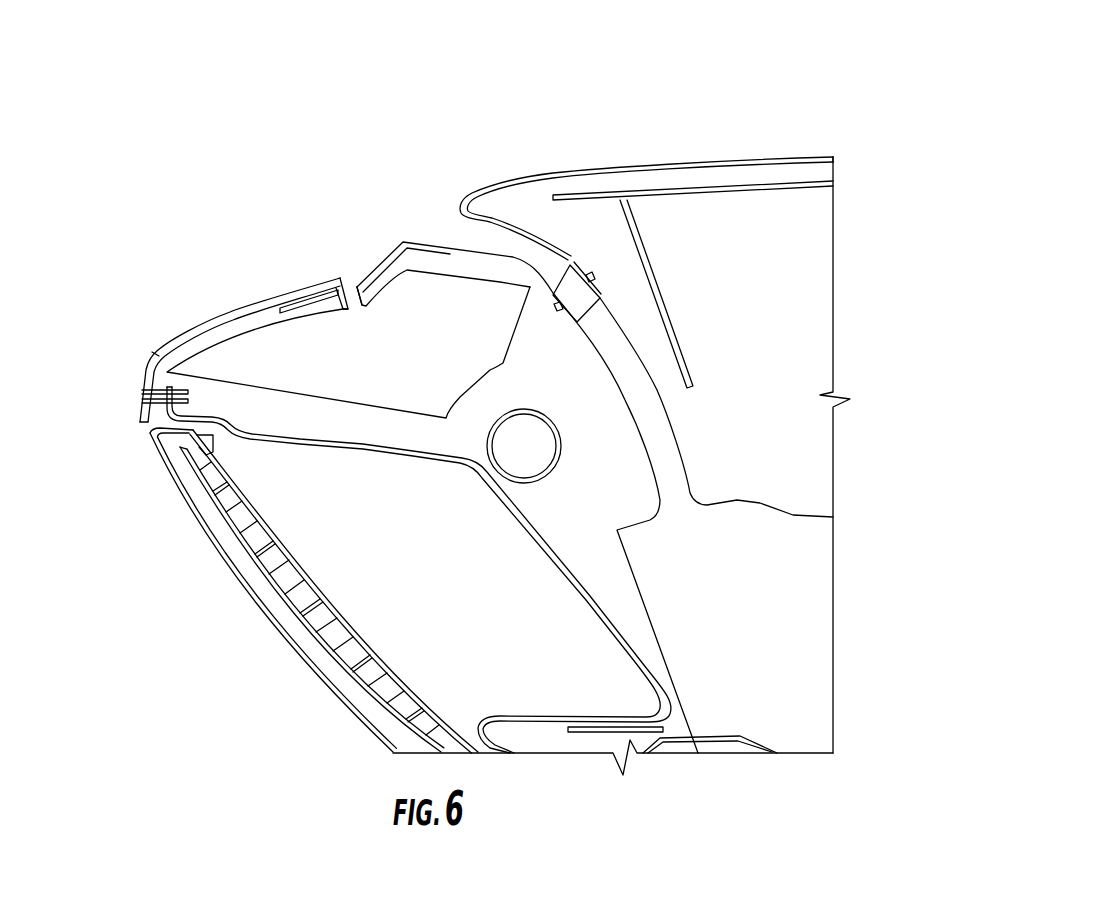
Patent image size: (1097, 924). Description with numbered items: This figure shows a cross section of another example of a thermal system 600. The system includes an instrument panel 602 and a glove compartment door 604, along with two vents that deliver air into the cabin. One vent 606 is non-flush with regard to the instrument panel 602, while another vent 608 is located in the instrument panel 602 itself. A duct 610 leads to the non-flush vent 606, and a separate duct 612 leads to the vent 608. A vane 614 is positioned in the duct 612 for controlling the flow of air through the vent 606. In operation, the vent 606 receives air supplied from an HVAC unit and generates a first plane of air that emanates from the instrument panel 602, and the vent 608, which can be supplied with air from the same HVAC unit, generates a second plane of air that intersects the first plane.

The thermal system 600 is at (738, 116).
The instrument panel 602 is at (567, 167).
The glove compartment door 604 is at (336, 697).
The vent 606 is at (463, 236).
The vent 608 is at (349, 293).
The duct 610 is at (648, 325).
The duct 612 is at (343, 405).
The vane 614 is at (578, 268).